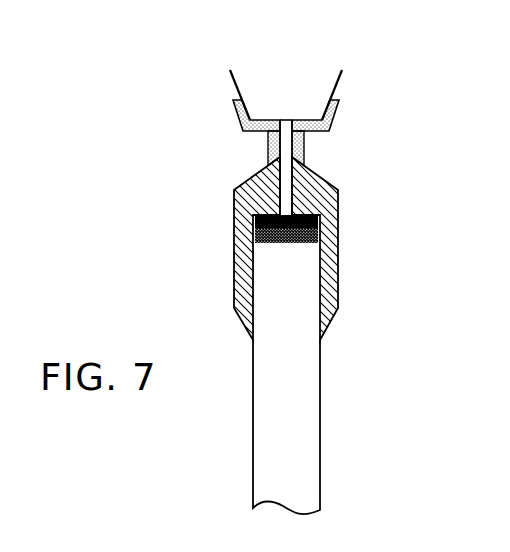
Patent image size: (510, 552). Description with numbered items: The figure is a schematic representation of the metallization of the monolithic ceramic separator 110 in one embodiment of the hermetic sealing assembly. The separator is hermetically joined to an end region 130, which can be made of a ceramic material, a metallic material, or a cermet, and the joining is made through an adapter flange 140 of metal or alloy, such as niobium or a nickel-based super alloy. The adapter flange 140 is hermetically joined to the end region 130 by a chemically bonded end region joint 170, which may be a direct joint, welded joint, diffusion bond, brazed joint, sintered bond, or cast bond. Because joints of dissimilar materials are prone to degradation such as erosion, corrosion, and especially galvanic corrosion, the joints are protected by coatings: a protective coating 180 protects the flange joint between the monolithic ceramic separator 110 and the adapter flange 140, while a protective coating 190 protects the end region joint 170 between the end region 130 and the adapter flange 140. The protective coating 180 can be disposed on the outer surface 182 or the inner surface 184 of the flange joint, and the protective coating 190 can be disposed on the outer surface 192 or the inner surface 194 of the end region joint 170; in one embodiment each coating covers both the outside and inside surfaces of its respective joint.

The monolithic ceramic separator 110 is at (307, 403).
The end region 130 is at (308, 92).
The adapter flange 140 is at (287, 151).
The end region joint 170 is at (291, 120).
The protective coating 180 is at (338, 288).
The outer surface 182 is at (255, 228).
The inner surface 184 is at (318, 228).
The protective coating 190 is at (251, 121).
The outer surface 192 is at (271, 131).
The inner surface 194 is at (279, 120).